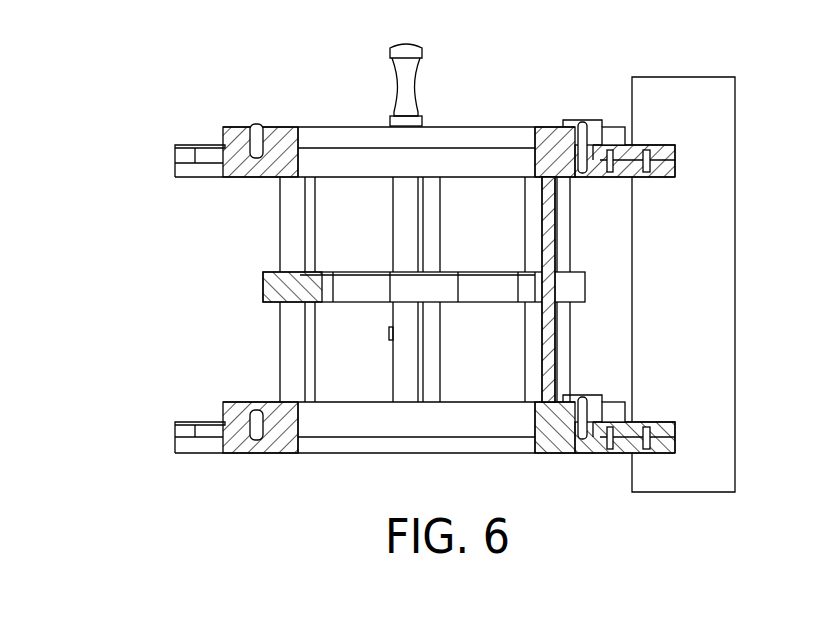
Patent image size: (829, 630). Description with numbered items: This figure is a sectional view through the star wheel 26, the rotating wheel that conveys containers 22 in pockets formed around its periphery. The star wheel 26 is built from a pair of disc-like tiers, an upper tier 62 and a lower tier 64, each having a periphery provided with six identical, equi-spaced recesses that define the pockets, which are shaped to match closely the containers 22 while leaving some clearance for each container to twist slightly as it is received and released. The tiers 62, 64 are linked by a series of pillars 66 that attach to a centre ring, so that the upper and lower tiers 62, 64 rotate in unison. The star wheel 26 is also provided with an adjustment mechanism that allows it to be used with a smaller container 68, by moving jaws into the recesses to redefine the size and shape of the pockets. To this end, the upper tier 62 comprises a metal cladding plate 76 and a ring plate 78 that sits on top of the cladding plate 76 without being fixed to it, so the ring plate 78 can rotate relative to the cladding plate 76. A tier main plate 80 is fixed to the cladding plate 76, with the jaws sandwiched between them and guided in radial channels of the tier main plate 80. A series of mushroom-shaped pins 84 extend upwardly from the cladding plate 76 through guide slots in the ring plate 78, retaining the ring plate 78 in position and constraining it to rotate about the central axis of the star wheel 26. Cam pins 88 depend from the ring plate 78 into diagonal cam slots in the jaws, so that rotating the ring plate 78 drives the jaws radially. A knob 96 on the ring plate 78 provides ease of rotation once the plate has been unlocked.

The container 22 is at (700, 302).
The star wheel 26 is at (204, 74).
The upper tier 62 is at (379, 134).
The lower tier 64 is at (158, 438).
The pillar 66 is at (404, 228).
The smaller container 68 is at (266, 289).
The cladding plate 76 is at (197, 147).
The ring plate 78 is at (530, 130).
The tier main plate 80 is at (520, 170).
The mushroom-shaped pin 84 is at (580, 121).
The cam pin 88 is at (262, 127).
The knob 96 is at (404, 89).